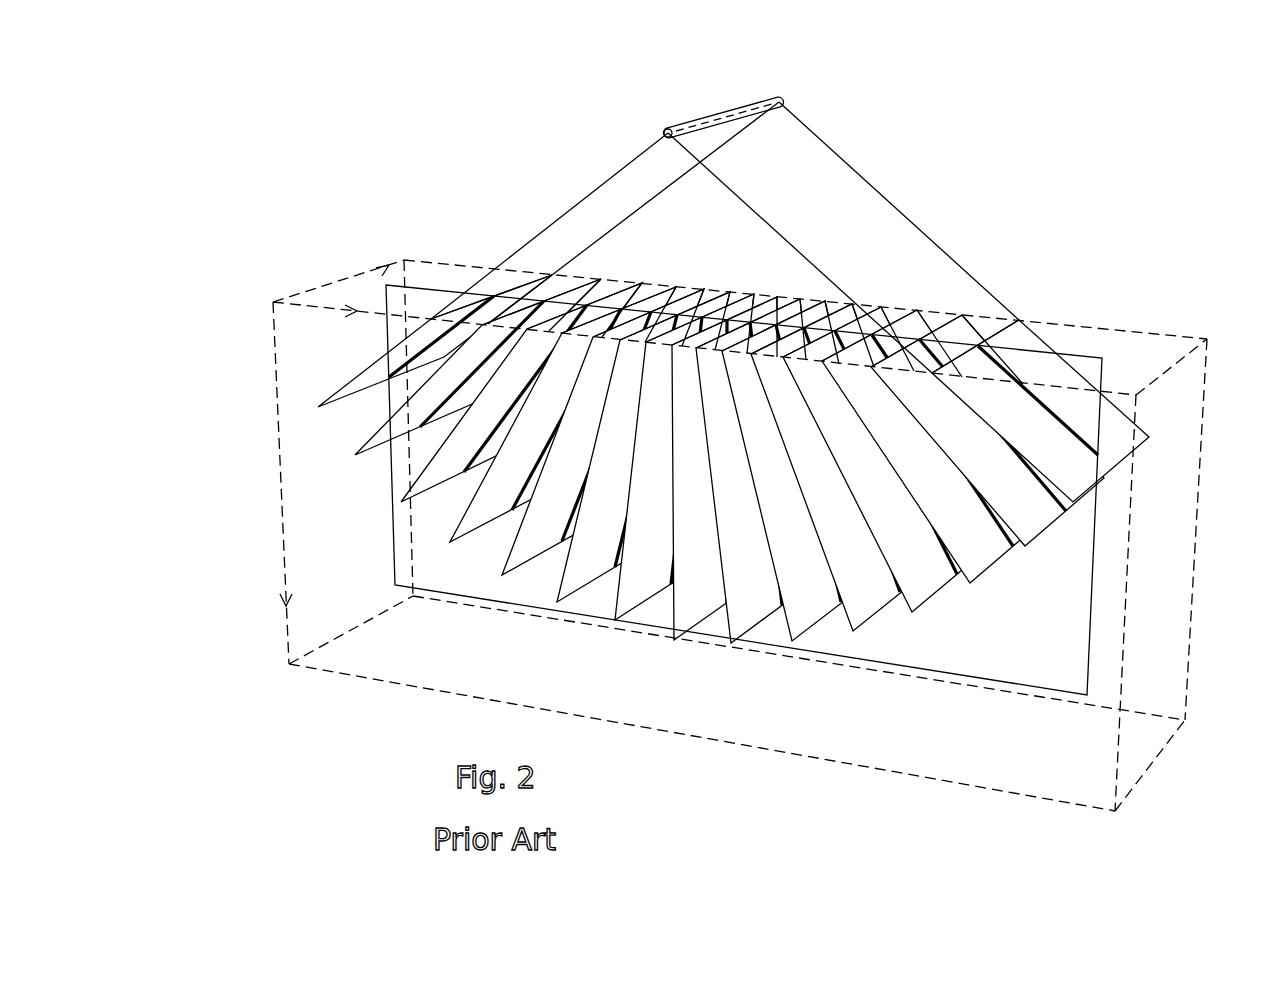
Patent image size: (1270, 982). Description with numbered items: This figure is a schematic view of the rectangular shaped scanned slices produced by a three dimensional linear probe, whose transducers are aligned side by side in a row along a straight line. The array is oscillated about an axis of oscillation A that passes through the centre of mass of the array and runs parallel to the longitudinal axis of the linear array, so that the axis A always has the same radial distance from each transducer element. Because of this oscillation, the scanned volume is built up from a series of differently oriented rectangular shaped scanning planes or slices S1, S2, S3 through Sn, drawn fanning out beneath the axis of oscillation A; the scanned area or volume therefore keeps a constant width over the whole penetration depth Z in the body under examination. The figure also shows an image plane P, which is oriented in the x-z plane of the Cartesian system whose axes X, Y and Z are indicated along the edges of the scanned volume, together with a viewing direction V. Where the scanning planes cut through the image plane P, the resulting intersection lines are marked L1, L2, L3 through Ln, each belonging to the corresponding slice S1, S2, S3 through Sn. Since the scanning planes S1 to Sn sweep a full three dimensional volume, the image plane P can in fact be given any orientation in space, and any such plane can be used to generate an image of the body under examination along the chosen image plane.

The axis of oscillation A is at (781, 100).
The image plane P is at (1055, 655).
The scanning plane S1 is at (1086, 447).
The scanning plane S2 is at (1011, 449).
The scanning plane S3 is at (952, 460).
The scanning plane Sn is at (425, 408).
The intersection line L1 is at (1103, 447).
The intersection line L2 is at (1035, 398).
The intersection line L3 is at (990, 512).
The intersection line Ln is at (440, 422).
The x axis X is at (307, 306).
The y axis Y is at (342, 276).
The penetration depth Z is at (275, 435).
The viewing direction V is at (259, 571).